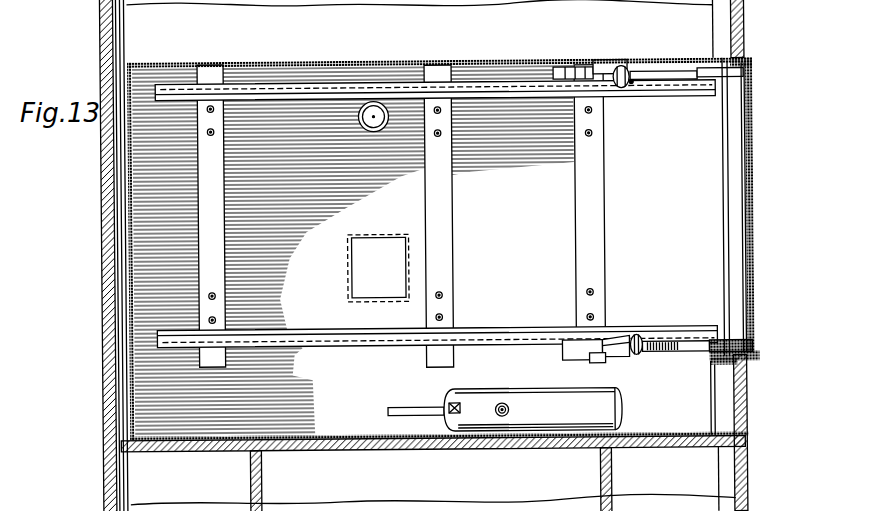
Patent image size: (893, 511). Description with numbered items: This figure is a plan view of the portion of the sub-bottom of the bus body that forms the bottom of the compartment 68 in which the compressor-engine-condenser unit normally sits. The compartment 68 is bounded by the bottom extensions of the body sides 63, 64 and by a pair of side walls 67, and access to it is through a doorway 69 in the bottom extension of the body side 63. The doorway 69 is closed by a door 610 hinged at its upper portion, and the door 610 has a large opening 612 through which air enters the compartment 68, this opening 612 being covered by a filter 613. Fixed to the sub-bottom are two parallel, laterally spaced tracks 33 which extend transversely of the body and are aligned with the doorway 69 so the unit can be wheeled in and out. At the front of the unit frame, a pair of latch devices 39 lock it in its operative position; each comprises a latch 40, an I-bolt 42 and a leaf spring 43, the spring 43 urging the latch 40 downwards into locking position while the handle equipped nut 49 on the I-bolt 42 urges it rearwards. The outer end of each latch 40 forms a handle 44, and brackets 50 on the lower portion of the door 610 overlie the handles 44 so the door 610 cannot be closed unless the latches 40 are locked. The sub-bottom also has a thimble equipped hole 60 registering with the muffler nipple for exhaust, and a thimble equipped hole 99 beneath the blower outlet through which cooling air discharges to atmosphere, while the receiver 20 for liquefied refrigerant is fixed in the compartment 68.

The receiver 20 is at (505, 410).
The tracks 33 is at (300, 350).
The latch devices 39 is at (604, 359).
The latch 40 is at (604, 66).
The I-bolt 42 is at (632, 88).
The leaf spring 43 is at (591, 71).
The handles 44 is at (672, 77).
The handle equipped nuts 49 is at (625, 71).
The brackets 50 is at (750, 63).
The thimble equipped hole 60 is at (379, 132).
The thimble equipped hole 99 is at (373, 301).
The body side 63 is at (745, 36).
The body side 64 is at (107, 262).
The side walls 67 is at (344, 443).
The compartment 68 is at (354, 251).
The doorway 69 is at (753, 510).
The door 610 is at (758, 353).
The opening 612 is at (745, 380).
The filter 613 is at (752, 310).